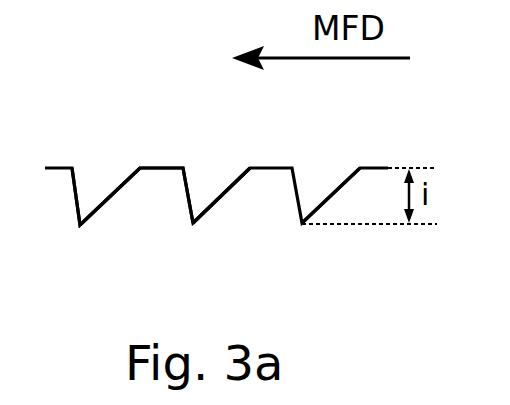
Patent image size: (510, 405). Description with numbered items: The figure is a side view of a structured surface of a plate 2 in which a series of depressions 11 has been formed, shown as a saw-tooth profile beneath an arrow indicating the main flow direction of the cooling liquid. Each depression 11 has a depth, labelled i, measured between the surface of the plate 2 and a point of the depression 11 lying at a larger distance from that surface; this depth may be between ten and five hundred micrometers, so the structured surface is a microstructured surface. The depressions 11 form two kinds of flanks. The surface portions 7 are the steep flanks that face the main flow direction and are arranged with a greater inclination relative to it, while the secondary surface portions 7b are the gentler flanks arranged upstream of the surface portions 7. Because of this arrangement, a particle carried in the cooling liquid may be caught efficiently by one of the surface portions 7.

The plate 2 is at (371, 167).
The surface portions 7 is at (187, 190).
The secondary surface portions 7b is at (226, 190).
The depressions 11 is at (183, 200).